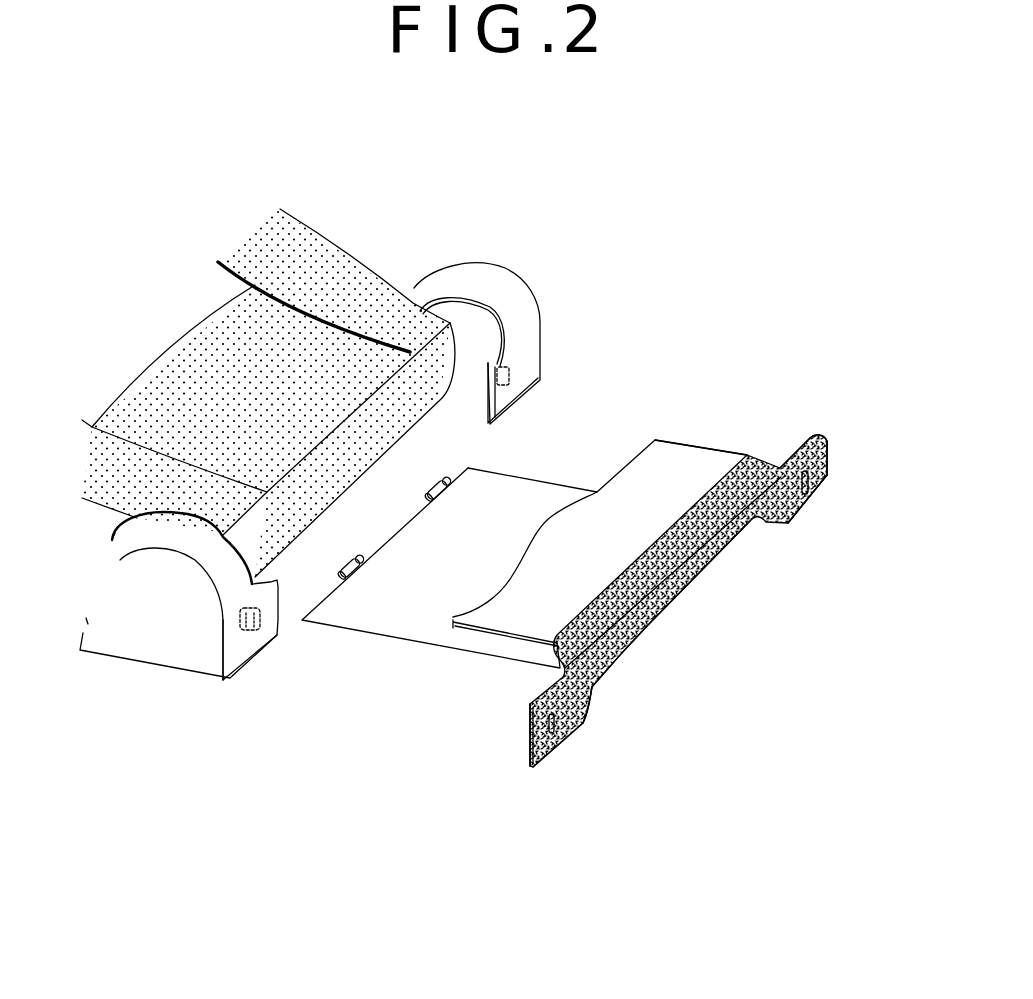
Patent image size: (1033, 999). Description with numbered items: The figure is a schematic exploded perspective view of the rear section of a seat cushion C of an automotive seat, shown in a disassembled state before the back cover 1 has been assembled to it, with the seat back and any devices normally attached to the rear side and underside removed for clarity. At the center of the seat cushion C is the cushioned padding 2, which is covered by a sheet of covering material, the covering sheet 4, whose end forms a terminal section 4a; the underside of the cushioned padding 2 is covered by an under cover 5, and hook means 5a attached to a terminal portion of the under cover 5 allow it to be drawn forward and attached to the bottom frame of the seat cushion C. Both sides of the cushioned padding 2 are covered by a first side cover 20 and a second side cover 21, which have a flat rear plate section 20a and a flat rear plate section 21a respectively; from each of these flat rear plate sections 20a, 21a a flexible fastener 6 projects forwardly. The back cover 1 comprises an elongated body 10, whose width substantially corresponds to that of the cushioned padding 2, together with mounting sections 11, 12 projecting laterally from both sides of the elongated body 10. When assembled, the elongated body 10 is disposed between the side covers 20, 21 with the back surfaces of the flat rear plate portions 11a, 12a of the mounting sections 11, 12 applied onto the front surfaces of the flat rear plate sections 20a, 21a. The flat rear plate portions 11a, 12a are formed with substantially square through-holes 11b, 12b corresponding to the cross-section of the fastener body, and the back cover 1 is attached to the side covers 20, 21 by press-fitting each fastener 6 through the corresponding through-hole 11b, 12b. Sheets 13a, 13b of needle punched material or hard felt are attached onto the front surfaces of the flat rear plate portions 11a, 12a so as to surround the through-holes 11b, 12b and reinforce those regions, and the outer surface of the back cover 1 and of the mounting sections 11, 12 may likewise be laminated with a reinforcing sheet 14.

The seat cushion C is at (213, 249).
The back cover 1 is at (679, 610).
The cushioned padding 2 is at (305, 340).
The covering sheet 4 is at (540, 537).
The terminal section of the covering sheet 4a is at (675, 453).
The under cover 5 is at (397, 624).
The hook means 5a is at (440, 476).
The fastener 6 is at (251, 633).
The elongated body 10 is at (679, 610).
The mounting section 11 is at (551, 751).
The flat rear plate portion 11a is at (528, 745).
The through-hole 11b is at (572, 736).
The mounting section 12 is at (799, 448).
The flat rear plate portion 12a is at (828, 492).
The through-hole 12b is at (806, 490).
The sheet 13a is at (583, 700).
The sheet 13b is at (806, 517).
The sheet 14 is at (717, 548).
The first side cover 20 is at (168, 637).
The flat rear plate section 20a is at (233, 662).
The second side cover 21 is at (480, 278).
The flat rear plate section 21a is at (522, 388).